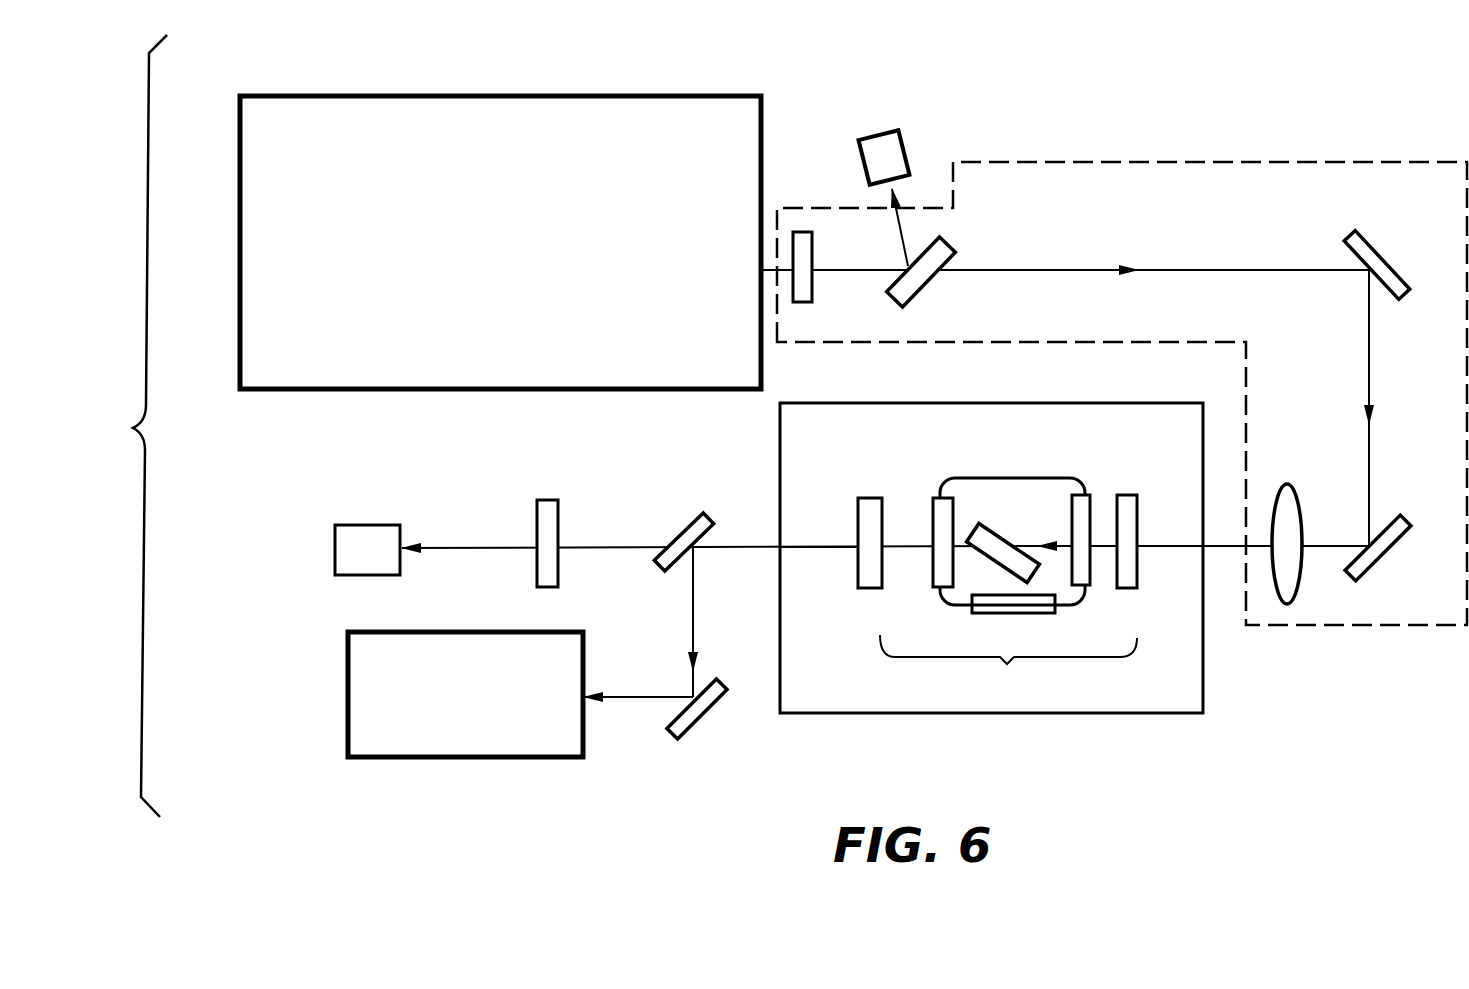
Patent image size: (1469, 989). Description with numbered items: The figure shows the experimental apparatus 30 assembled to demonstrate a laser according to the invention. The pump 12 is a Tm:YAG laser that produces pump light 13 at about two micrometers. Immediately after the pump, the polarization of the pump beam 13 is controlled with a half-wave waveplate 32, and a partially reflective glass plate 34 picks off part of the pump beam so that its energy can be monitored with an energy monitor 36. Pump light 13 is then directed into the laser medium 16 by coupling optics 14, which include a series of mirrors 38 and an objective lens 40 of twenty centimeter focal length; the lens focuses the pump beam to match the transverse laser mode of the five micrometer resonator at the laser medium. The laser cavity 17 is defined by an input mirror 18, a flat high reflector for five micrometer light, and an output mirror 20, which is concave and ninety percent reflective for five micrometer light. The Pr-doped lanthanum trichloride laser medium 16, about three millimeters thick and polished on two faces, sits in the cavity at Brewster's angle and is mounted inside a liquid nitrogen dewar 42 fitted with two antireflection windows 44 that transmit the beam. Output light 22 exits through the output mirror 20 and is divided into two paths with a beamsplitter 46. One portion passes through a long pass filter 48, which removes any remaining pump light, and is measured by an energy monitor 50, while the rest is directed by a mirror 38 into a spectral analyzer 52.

The pump 12 is at (500, 242).
The pump light 13 is at (1190, 270).
The coupling optics 14 is at (1310, 117).
The laser medium 16 is at (995, 528).
The laser cavity 17 is at (1008, 646).
The input mirror 18 is at (1128, 495).
The output mirror 20 is at (867, 498).
The output beam 22 is at (810, 547).
The experimental apparatus 30 is at (126, 426).
The λ/2 waveplate 32 is at (793, 232).
The partially reflective glass plate 34 is at (952, 247).
The energy monitor 36 is at (907, 150).
The mirror 38 is at (1402, 267).
The objective lens 40 is at (1283, 484).
The liquid nitrogen dewar 42 is at (1057, 447).
The antireflection windows 44 is at (938, 587).
The beam splitter 46 is at (678, 523).
The long pass filter 48 is at (545, 500).
The energy monitor 50 is at (367, 550).
The spectral analyzer 52 is at (465, 694).